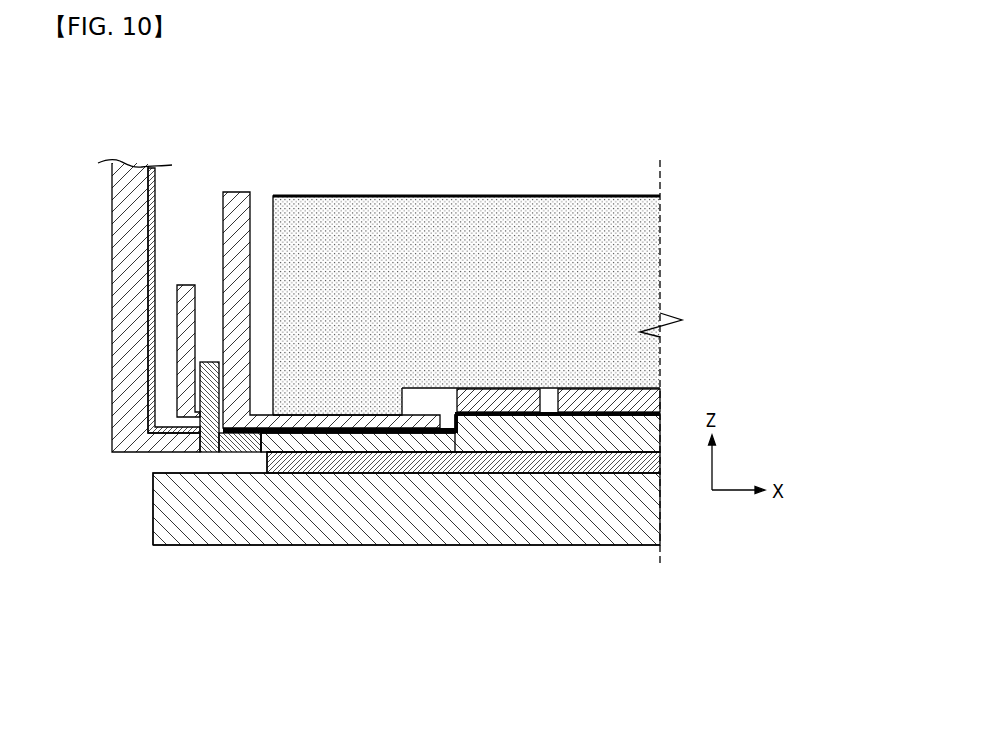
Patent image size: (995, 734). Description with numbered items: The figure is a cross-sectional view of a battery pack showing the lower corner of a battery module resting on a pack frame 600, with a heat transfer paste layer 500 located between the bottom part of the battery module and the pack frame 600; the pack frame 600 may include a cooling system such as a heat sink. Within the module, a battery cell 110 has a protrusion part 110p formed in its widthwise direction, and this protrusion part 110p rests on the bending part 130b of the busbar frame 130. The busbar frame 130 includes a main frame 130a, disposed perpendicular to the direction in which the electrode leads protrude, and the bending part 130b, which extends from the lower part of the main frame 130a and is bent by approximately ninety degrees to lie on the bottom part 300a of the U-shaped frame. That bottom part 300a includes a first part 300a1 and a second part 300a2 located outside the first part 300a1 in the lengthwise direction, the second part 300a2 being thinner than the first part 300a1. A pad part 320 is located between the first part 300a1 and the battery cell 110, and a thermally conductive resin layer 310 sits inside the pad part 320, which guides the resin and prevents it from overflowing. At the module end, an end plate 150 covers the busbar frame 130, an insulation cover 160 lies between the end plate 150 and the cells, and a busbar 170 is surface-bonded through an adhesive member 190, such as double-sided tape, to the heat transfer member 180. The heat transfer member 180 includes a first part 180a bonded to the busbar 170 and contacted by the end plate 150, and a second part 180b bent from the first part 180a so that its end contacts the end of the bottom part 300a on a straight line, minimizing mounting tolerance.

The battery cell 110 is at (460, 222).
The protrusion part 110p is at (338, 403).
The busbar frame 130 is at (752, 203).
The main frame 130a is at (241, 205).
The bending part 130b is at (418, 427).
The end plate 150 is at (123, 197).
The insulation cover 160 is at (150, 242).
The busbar 170 is at (185, 315).
The heat transfer member 180 is at (262, 610).
The first part 180a is at (205, 398).
The second part 180b is at (232, 445).
The adhesive member 190 is at (195, 383).
The bottom part 300a is at (752, 120).
The first part 300a1 is at (582, 437).
The second part 300a2 is at (290, 445).
The thermally conductive resin layer 310 is at (627, 403).
The pad part 320 is at (502, 400).
The heat transfer paste layer 500 is at (463, 465).
The pack frame 600 is at (537, 520).